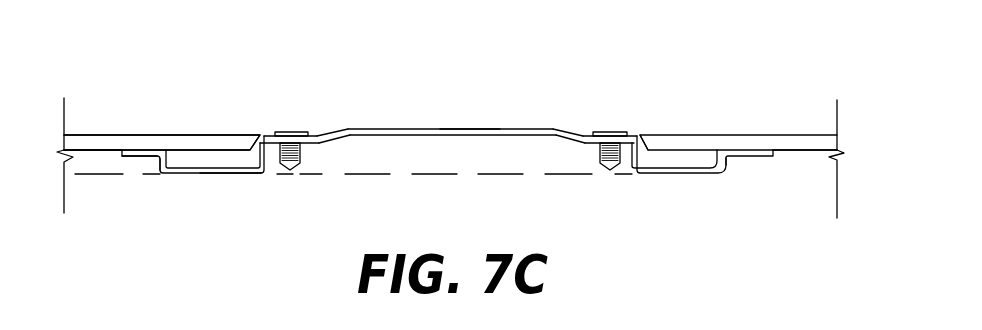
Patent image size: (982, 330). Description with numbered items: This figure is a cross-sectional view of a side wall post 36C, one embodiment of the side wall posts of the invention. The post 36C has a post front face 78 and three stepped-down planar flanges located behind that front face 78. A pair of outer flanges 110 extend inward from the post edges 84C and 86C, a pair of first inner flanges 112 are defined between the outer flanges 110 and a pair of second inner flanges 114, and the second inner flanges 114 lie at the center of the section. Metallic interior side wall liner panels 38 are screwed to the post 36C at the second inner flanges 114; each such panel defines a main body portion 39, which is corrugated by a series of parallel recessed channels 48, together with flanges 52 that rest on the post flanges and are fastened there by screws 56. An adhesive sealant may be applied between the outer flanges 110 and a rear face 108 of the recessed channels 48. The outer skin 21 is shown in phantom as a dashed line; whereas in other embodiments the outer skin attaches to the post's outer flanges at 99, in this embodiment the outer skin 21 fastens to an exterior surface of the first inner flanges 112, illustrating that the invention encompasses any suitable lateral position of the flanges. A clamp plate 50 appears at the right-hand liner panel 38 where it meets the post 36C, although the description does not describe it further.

The outer skin 21 is at (438, 174).
The post 36C is at (400, 129).
The metallic interior side wall liner panels 38 is at (185, 135).
The main body portion 39 is at (112, 135).
The recessed channels 48 is at (83, 151).
The clamp plate 50 is at (645, 143).
The flanges 52 is at (265, 137).
The screws 56 is at (312, 134).
The post front face 78 is at (503, 129).
The edge 84C is at (122, 152).
The edge 86C is at (777, 157).
The attachment location 99 is at (242, 177).
The rear face 108 is at (135, 157).
The outer flanges 110 is at (162, 168).
The first inner flanges 112 is at (222, 176).
The second inner flanges 114 is at (290, 133).